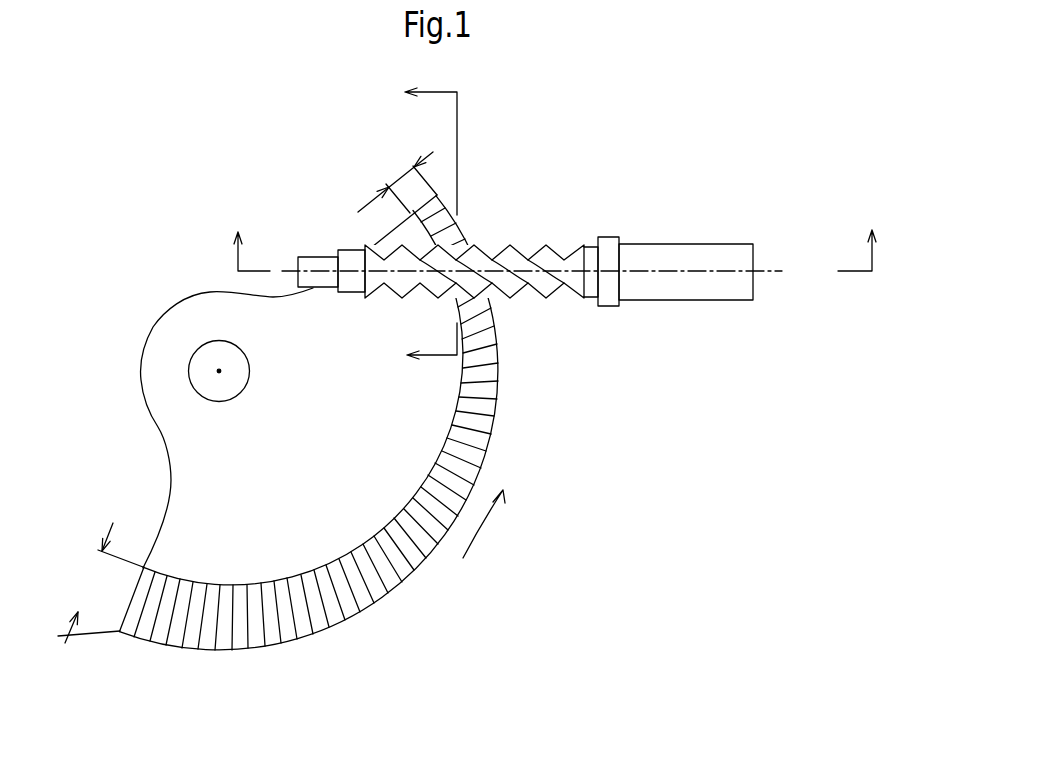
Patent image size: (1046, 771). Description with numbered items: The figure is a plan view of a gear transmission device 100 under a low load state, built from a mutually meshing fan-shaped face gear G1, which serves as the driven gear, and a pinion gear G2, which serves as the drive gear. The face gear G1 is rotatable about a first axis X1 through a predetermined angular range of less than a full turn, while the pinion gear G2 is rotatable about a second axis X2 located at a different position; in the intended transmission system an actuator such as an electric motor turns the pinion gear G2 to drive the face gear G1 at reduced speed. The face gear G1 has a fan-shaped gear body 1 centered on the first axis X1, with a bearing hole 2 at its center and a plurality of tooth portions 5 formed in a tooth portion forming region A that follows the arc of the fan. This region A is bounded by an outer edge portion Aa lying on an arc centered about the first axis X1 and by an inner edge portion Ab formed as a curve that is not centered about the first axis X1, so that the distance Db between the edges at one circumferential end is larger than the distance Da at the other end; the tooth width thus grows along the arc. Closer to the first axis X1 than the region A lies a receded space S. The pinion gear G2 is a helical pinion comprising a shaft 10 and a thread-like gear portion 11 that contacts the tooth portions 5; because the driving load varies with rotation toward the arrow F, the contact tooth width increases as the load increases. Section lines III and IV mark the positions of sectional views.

The gear transmission device 100 is at (141, 144).
The gear body 1 is at (193, 468).
The bearing hole 2 is at (212, 382).
The tooth portions 5 is at (310, 622).
The shaft 10 is at (677, 287).
The gear portion 11 is at (550, 287).
The tooth portion forming region A is at (309, 466).
The outer edge portion Aa is at (273, 648).
The inner edge portion Ab is at (243, 587).
The receded space S is at (333, 525).
The arrow F is at (483, 528).
The distance Da is at (397, 179).
The distance Db is at (100, 583).
The first axis X1 is at (219, 371).
The second axis X2 is at (550, 273).
The face gear G1 is at (112, 320).
The pinion gear G2 is at (548, 195).
The section line III- III is at (555, 250).
The section line IV- IV is at (431, 223).